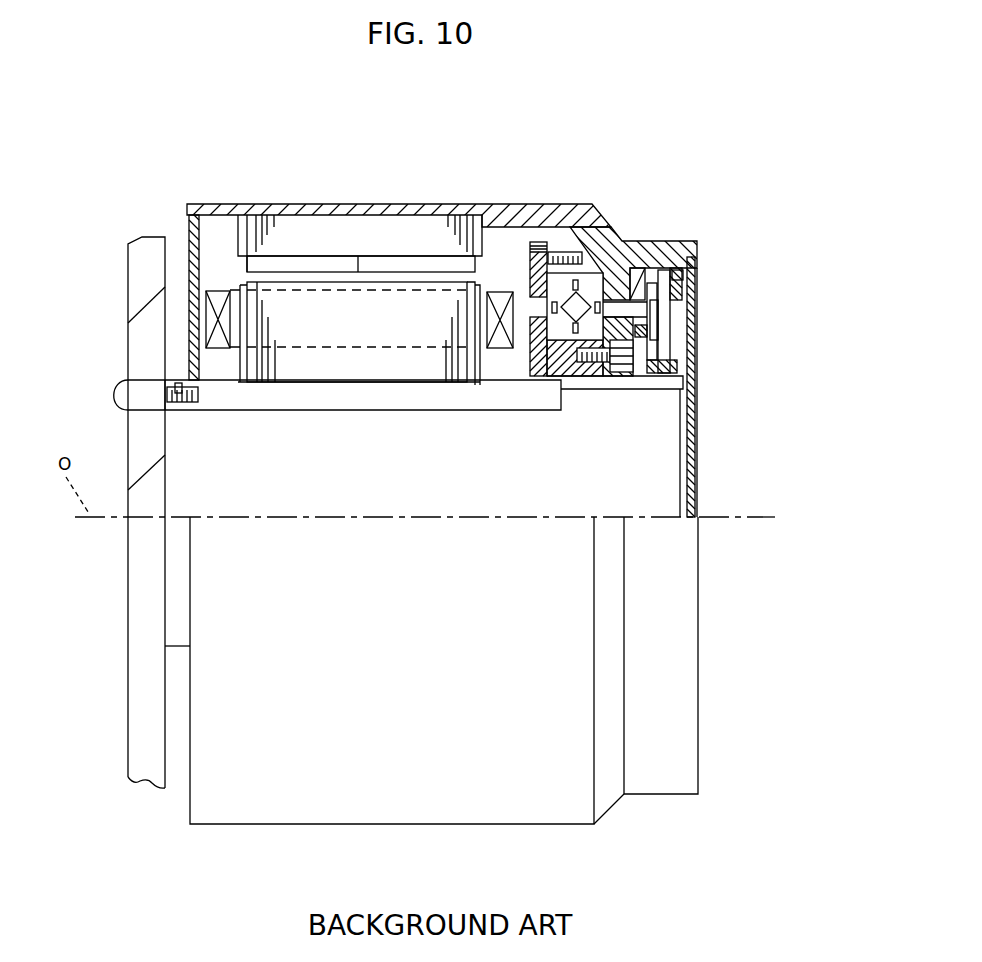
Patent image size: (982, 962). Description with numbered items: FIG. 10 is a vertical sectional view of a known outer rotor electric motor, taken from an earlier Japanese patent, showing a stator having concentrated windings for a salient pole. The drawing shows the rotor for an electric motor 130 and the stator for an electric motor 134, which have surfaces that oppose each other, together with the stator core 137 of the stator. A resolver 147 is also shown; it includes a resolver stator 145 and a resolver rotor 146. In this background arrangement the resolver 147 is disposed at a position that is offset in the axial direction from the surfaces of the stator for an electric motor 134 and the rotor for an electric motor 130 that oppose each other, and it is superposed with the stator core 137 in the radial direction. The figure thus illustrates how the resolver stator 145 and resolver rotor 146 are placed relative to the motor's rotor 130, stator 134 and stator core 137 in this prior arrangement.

The rotor for an electric motor 130 is at (460, 192).
The stator for an electric motor 134 is at (312, 370).
The stator core 137 is at (397, 368).
The resolver stator 145 is at (655, 324).
The resolver rotor 146 is at (652, 309).
The resolver 147 is at (788, 292).